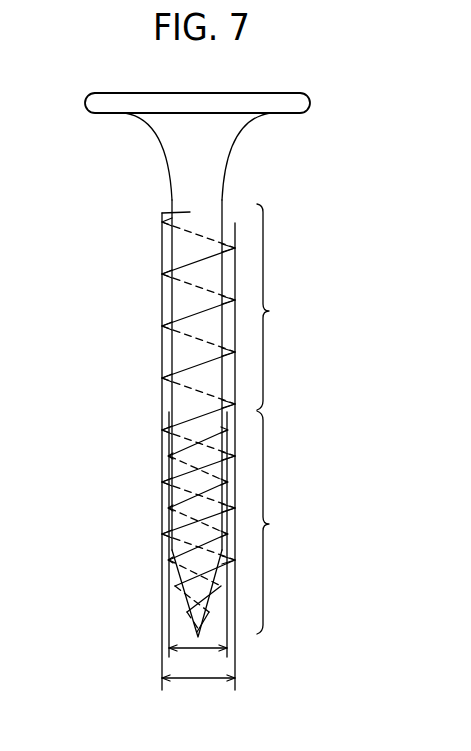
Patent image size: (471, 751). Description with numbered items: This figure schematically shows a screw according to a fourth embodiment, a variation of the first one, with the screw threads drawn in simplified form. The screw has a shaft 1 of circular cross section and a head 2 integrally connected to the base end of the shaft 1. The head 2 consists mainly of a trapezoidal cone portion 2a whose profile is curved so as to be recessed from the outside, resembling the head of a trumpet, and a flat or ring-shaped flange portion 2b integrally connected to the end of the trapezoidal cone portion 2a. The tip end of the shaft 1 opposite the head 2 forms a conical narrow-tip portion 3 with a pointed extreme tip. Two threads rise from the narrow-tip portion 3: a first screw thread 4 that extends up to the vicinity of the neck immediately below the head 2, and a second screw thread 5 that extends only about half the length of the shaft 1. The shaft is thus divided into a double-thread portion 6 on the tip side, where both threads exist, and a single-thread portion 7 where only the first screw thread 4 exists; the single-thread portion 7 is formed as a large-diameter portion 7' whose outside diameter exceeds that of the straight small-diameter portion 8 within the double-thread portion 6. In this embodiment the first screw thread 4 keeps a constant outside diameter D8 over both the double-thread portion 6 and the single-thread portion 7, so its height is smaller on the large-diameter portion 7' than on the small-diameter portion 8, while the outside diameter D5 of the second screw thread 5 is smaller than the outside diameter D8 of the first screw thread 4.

The shaft 1 is at (206, 341).
The head 2 is at (206, 123).
The trapezoidal cone portion 2a is at (228, 136).
The flange portion 2b is at (107, 103).
The narrow-tip portion 3 is at (178, 602).
The first screw thread 4 is at (190, 369).
The second screw thread 5 is at (167, 463).
The double-thread portion 6 is at (279, 522).
The single-thread portion 7 is at (276, 307).
The large-diameter portion 7' is at (240, 310).
The small-diameter portion 8 is at (232, 461).
The outside diameter of the second screw thread D5 is at (200, 652).
The outside diameter of the first screw thread D8 is at (198, 680).